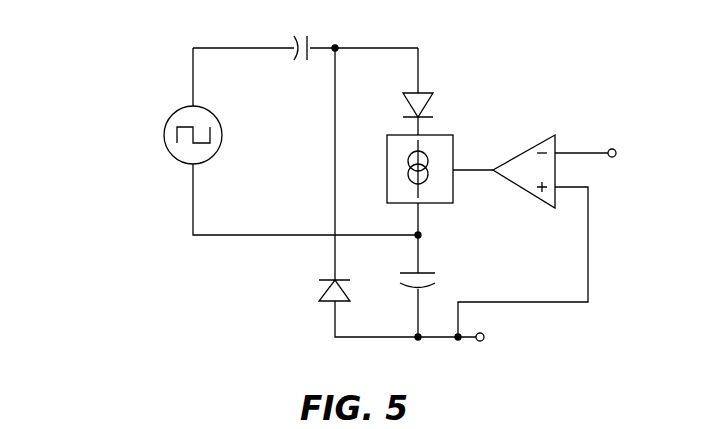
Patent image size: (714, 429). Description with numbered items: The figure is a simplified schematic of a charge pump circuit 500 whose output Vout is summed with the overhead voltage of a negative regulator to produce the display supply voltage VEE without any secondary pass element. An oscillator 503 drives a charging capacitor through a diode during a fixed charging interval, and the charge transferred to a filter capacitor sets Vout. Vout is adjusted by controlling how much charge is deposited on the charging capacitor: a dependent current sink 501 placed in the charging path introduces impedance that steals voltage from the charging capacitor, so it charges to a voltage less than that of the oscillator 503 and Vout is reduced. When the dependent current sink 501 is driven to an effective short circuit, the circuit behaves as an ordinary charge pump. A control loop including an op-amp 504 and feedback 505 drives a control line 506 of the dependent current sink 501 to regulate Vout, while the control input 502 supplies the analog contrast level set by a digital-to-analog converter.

The charge pump circuit 500 is at (147, 278).
The dependent current sink 501 is at (387, 165).
The control input 502 is at (590, 152).
The oscillator 503 is at (164, 125).
The op-amp 504 is at (520, 148).
The feedback 505 is at (590, 252).
The control line 506 is at (471, 173).